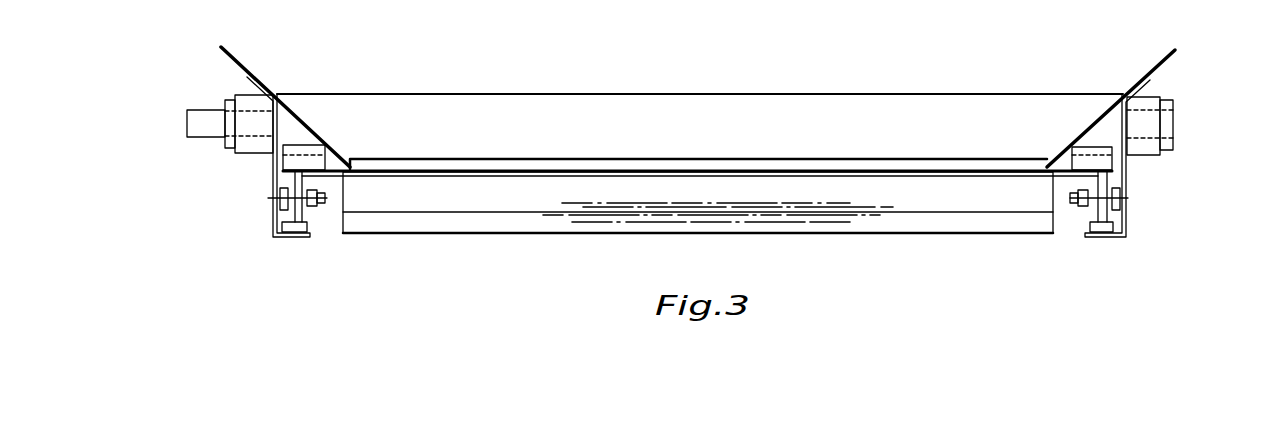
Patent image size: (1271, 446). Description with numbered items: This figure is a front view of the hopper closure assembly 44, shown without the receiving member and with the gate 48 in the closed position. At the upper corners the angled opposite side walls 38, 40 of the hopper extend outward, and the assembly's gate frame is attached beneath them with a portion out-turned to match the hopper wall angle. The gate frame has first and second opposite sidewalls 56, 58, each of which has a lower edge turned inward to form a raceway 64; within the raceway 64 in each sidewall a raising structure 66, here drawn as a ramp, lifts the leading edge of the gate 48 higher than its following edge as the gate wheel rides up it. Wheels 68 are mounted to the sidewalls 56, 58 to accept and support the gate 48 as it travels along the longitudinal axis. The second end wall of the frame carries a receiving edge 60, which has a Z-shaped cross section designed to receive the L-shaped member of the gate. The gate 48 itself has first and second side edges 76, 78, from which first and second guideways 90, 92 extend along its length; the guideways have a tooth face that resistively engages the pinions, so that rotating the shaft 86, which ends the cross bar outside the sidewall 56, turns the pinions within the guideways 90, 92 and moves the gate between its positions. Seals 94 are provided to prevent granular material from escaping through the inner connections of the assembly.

The side wall 38 is at (234, 56).
The side wall 40 is at (1166, 54).
The hopper closure assembly 44 is at (1182, 167).
The gate 48 is at (902, 177).
The first sidewall 56 is at (268, 199).
The second sidewall 58 is at (1130, 200).
The receiving edge 60 is at (892, 233).
The raceway 64 is at (313, 223).
The raising structure 66 is at (292, 232).
The wheel 68 is at (288, 216).
The first side edge 76 is at (284, 170).
The second side edge 78 is at (1110, 172).
The shaft 86 is at (186, 113).
The first guideway 90 is at (313, 149).
The second guideway 92 is at (1097, 147).
The seal 94 is at (1048, 160).